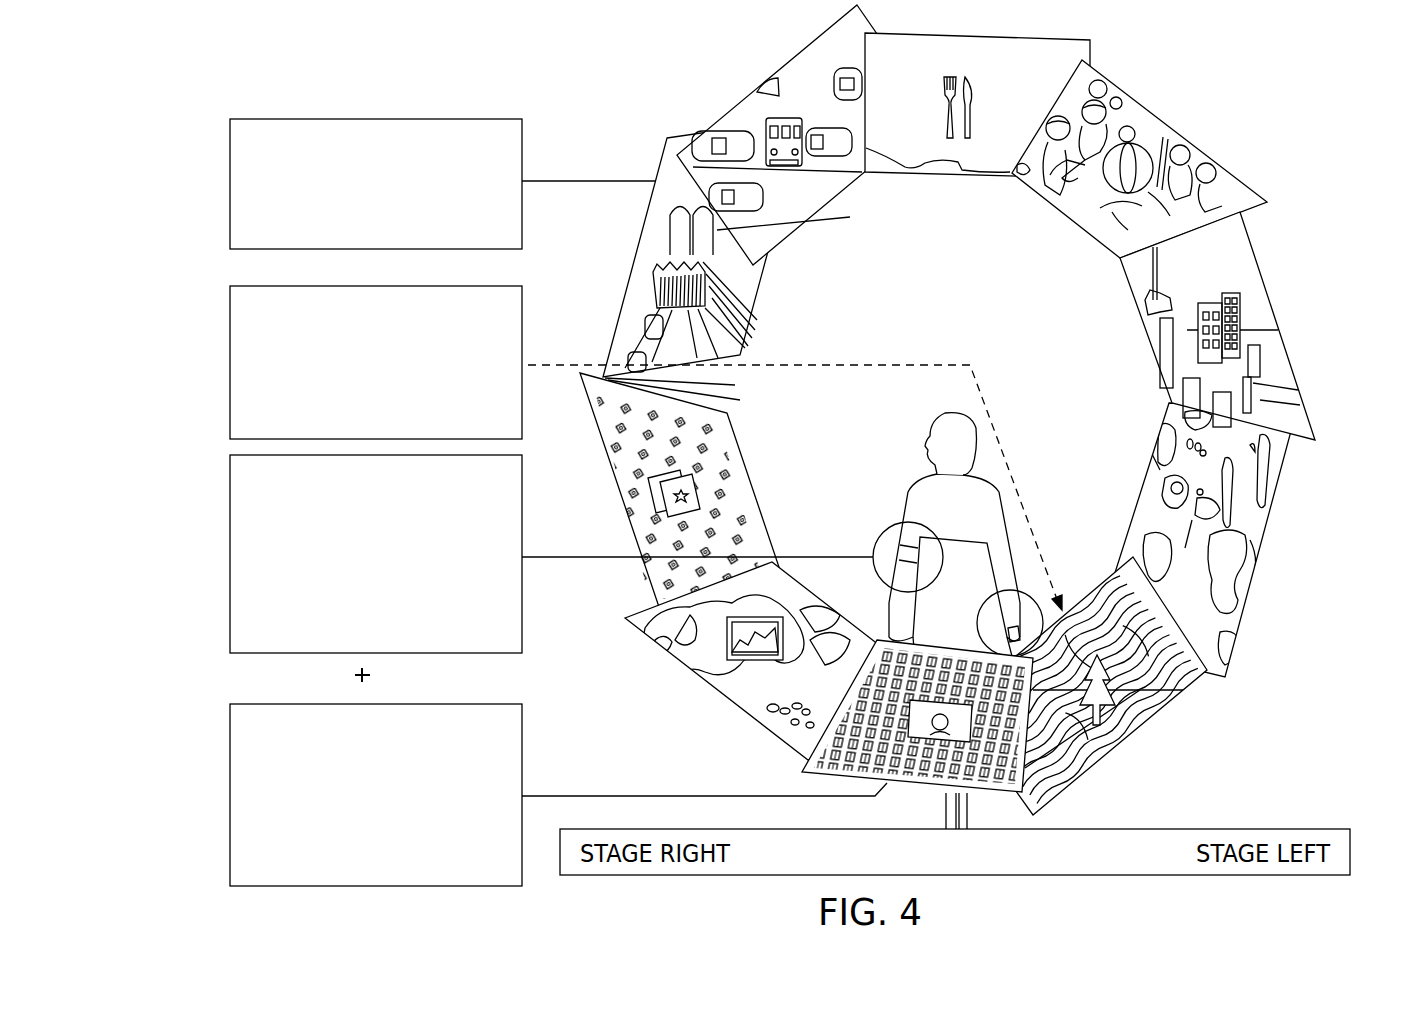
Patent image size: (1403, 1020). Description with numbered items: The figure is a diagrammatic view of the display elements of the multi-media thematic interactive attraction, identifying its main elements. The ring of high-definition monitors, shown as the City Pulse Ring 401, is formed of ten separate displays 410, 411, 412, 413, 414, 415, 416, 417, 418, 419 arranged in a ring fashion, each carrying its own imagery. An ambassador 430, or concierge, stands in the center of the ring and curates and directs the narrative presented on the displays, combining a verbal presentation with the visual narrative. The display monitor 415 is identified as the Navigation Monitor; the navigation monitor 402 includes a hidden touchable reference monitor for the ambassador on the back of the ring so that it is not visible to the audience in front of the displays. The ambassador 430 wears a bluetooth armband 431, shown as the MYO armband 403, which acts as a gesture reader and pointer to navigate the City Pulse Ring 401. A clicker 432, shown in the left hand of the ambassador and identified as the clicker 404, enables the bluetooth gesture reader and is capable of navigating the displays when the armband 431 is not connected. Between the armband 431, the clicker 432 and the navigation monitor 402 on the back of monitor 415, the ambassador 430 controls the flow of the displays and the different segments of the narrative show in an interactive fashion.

The City Pulse Ring 401 is at (372, 119).
The navigation monitor 402 is at (230, 337).
The MYO armband 403 is at (230, 543).
The clicker 404 is at (230, 818).
The display 410 is at (740, 98).
The display 411 is at (1060, 35).
The display 412 is at (1203, 147).
The display 413 is at (1283, 333).
The display 414 is at (1263, 548).
The display monitor 415 is at (1148, 725).
The display 416 is at (840, 773).
The display 417 is at (713, 685).
The display 418 is at (635, 583).
The display 419 is at (622, 300).
The ambassador 430 is at (927, 433).
The armband 431 is at (875, 530).
The clicker 432 is at (1033, 590).